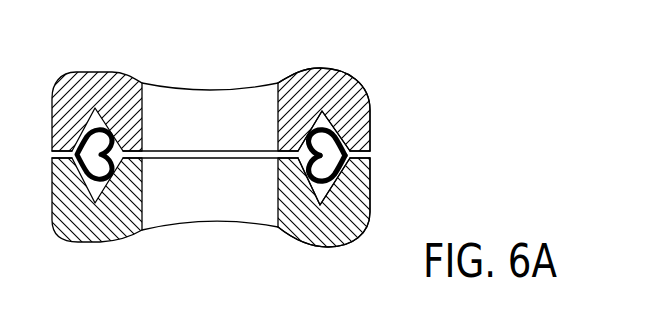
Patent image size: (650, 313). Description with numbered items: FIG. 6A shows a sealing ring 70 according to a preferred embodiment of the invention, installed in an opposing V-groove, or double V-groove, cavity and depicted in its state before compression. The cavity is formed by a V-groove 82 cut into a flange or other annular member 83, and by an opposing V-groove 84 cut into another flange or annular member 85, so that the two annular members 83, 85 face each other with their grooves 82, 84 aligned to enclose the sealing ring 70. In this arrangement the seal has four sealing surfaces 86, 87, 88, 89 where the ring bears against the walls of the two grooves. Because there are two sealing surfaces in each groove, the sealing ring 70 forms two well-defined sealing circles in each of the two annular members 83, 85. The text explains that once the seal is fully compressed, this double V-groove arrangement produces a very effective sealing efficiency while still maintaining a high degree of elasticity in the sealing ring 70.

The sealing ring 70 is at (323, 111).
The V-groove 82 is at (336, 120).
The annular member 83 is at (129, 82).
The opposing V-groove 84 is at (313, 198).
The annular member 85 is at (127, 225).
The sealing surface 86 is at (306, 137).
The sealing surface 87 is at (304, 175).
The sealing surface 88 is at (362, 138).
The sealing surface 89 is at (350, 173).